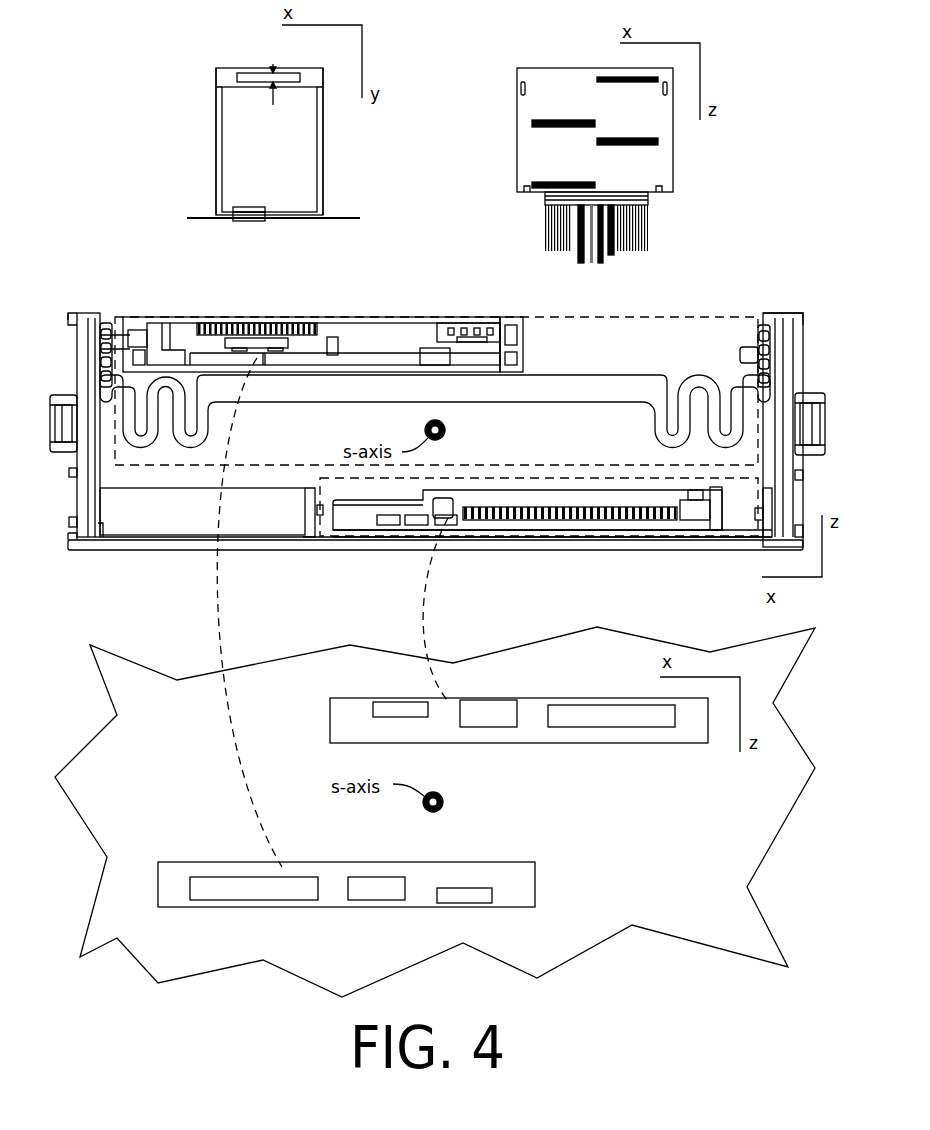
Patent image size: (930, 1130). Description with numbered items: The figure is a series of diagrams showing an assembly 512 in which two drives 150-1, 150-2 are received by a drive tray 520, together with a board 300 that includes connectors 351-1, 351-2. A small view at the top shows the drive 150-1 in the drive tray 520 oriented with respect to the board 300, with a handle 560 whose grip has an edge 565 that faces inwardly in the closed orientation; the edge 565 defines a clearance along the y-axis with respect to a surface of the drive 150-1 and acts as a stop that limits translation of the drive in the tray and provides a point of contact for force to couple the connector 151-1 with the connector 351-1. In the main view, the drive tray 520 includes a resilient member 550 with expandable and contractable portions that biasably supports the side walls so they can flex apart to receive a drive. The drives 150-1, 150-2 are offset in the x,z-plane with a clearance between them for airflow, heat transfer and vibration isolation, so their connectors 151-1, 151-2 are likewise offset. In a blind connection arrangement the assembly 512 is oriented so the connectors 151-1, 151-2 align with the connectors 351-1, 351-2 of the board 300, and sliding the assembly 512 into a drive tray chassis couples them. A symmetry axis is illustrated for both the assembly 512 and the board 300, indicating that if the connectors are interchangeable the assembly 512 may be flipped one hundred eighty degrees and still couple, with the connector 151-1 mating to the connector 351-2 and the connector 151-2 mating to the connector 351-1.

The assembly 512 is at (183, 281).
The first drive 150-1 is at (230, 140).
The second drive 150-2 is at (560, 488).
The connector of first drive 151-1 is at (240, 207).
The connector of second drive 151-2 is at (573, 527).
The first board connector 351-1 is at (255, 218).
The second board connector 351-2 is at (535, 728).
The board 300 is at (283, 220).
The drive tray 520 is at (323, 156).
The resilient member 550 is at (270, 388).
The handle 560 is at (232, 70).
The edge of grip 565 is at (266, 82).